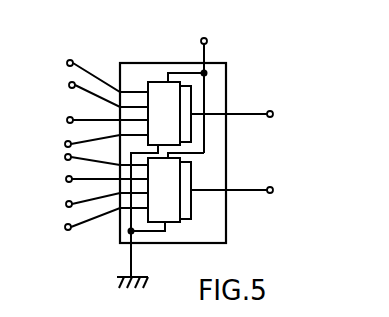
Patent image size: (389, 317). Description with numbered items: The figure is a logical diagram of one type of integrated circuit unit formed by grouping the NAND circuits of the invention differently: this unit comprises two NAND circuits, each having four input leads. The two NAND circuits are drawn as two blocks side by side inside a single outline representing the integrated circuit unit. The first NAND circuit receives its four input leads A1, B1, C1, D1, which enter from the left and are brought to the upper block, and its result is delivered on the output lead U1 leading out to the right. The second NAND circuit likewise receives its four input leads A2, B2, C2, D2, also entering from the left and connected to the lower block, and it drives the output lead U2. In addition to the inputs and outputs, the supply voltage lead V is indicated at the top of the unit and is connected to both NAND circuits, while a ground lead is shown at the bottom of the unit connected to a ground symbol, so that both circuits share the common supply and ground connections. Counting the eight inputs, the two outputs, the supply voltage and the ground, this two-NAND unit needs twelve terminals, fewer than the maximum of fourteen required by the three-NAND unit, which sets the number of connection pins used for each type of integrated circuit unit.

The input lead A1 is at (91, 71).
The input lead B1 is at (91, 91).
The input lead C1 is at (91, 119).
The input lead D1 is at (91, 143).
The input lead A2 is at (91, 163).
The input lead B2 is at (91, 186).
The input lead C2 is at (91, 207).
The input lead D2 is at (91, 225).
The output lead U1 is at (248, 114).
The output lead U2 is at (248, 190).
The supply voltage lead V is at (197, 76).